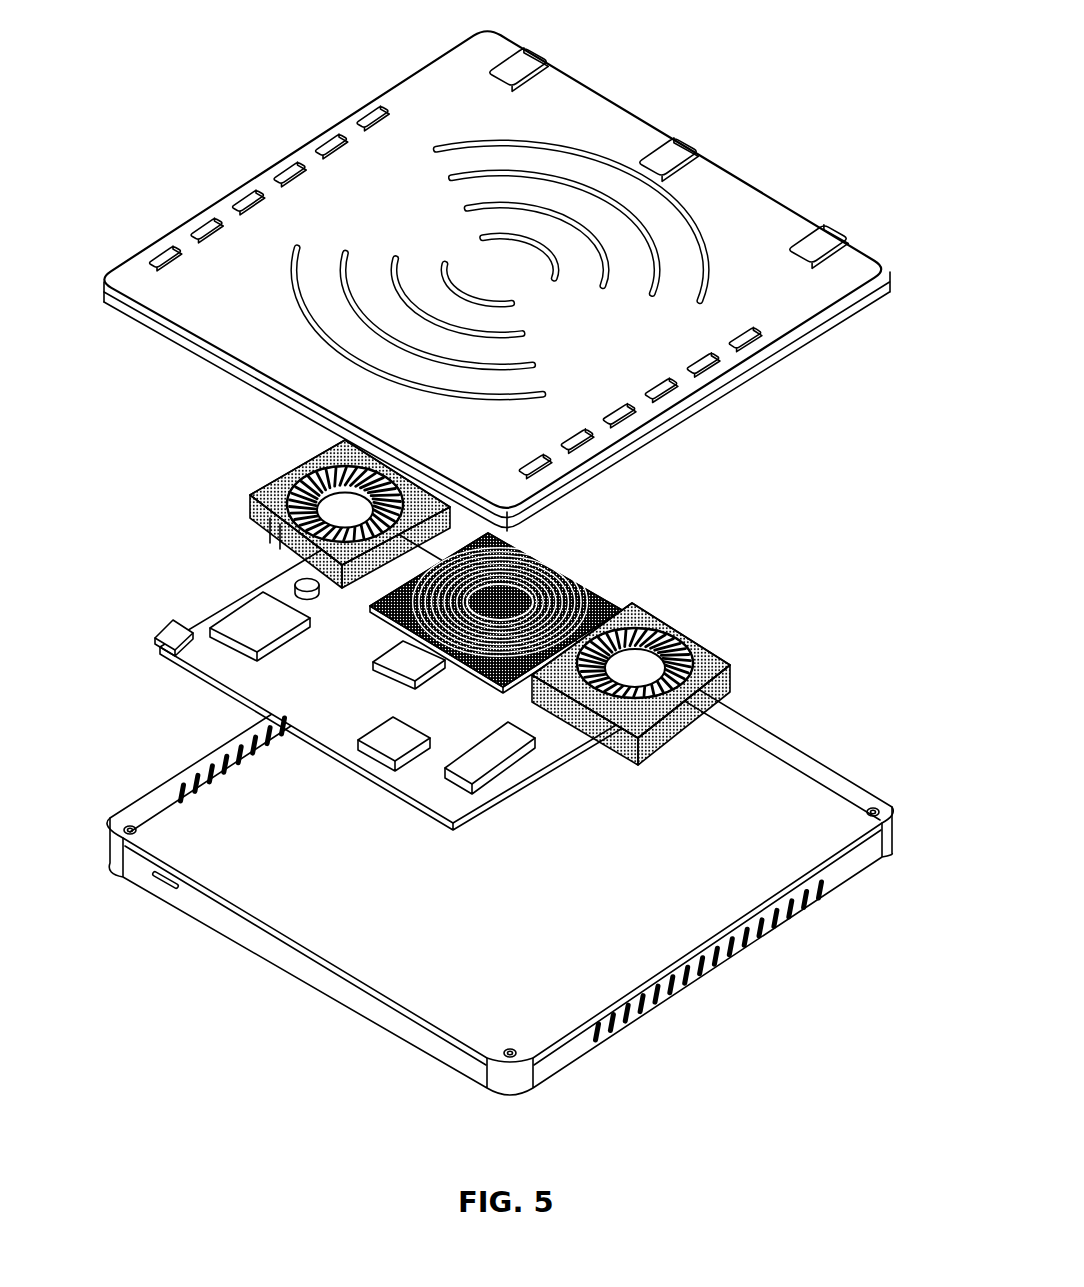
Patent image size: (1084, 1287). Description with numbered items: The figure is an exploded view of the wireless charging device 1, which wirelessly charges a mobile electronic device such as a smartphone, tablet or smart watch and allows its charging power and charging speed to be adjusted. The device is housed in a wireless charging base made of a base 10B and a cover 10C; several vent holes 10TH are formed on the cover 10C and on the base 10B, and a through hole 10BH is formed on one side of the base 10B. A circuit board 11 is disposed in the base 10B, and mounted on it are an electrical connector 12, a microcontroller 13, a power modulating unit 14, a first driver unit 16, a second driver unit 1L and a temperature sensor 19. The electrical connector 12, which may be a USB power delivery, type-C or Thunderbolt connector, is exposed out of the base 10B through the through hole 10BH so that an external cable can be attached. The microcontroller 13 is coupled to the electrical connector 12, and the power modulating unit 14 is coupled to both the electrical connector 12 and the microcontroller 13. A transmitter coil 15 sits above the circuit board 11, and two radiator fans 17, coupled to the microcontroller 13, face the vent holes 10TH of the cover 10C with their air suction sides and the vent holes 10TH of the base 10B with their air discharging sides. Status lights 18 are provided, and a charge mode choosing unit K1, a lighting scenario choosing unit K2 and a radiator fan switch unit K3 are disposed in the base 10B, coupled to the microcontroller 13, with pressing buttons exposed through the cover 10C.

The wireless charging device 1 is at (888, 112).
The cover 10C is at (520, 277).
The base 10B is at (519, 883).
The vent holes 10TH is at (343, 283).
The through hole 10BH is at (163, 888).
The status light 18 is at (233, 185).
The charge mode choosing unit K1 is at (823, 244).
The lighting scenario choosing unit K2 is at (670, 153).
The radiator fan switch unit K3 is at (525, 63).
The circuit board 11 is at (233, 690).
The electrical connector 12 is at (155, 634).
The microcontroller 13 is at (223, 614).
The power modulating unit 14 is at (393, 648).
The transmitter coil 15 is at (578, 585).
The first driver unit 16 is at (523, 770).
The radiator fan 17 is at (250, 496).
The temperature sensor 19 is at (297, 582).
The second driver unit 1L is at (370, 752).